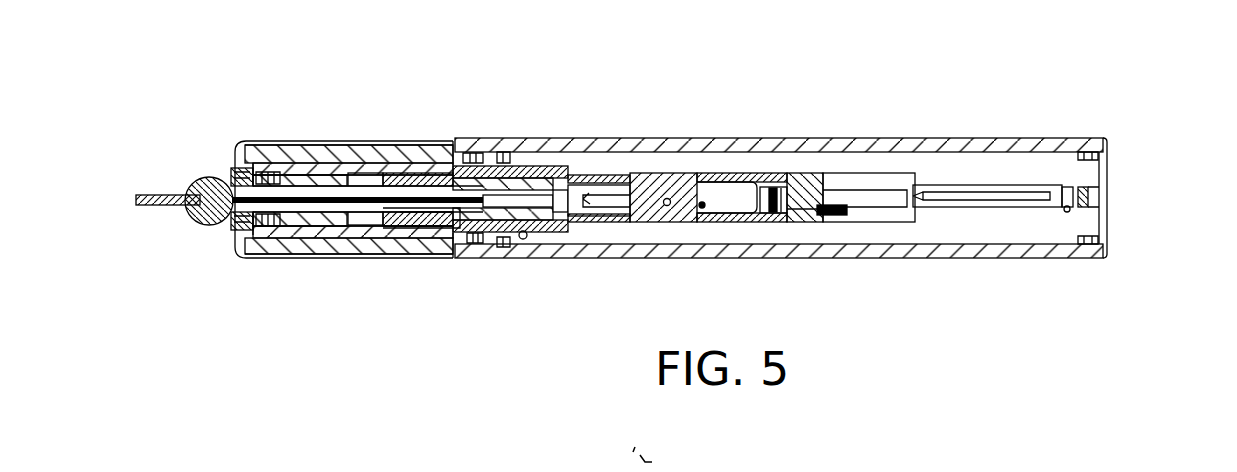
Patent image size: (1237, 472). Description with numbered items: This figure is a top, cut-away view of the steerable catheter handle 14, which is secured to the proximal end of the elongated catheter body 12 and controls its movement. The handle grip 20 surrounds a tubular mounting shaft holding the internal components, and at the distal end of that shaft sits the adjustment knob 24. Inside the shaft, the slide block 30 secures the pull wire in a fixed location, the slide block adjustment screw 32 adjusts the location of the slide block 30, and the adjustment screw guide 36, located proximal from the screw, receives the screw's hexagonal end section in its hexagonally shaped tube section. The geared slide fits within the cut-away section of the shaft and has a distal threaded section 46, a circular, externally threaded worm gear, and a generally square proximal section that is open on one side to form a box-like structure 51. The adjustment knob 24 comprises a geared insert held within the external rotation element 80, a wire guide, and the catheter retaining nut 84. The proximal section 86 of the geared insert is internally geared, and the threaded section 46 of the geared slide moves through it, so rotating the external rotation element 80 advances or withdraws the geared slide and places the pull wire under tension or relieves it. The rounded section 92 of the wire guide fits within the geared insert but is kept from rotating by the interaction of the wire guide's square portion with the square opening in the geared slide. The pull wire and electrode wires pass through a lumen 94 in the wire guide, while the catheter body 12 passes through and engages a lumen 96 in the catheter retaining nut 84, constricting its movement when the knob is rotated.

The elongated catheter body 12 is at (133, 191).
The steerable catheter handle 14 is at (1090, 96).
The handle grip 20 is at (765, 143).
The adjustment knob 24 is at (360, 136).
The slide block 30 is at (633, 180).
The slide block adjustment screw 32 is at (880, 196).
The adjustment screw guide 36 is at (1001, 183).
The distal threaded section 46 is at (400, 207).
The box-like structure 51 is at (592, 206).
The external rotation element 80 is at (418, 146).
The catheter retaining nut 84 is at (203, 178).
The proximal section of the geared insert 86 is at (418, 218).
The rounded section 92 is at (312, 190).
The lumen 94 is at (293, 199).
The lumen 96 is at (194, 198).